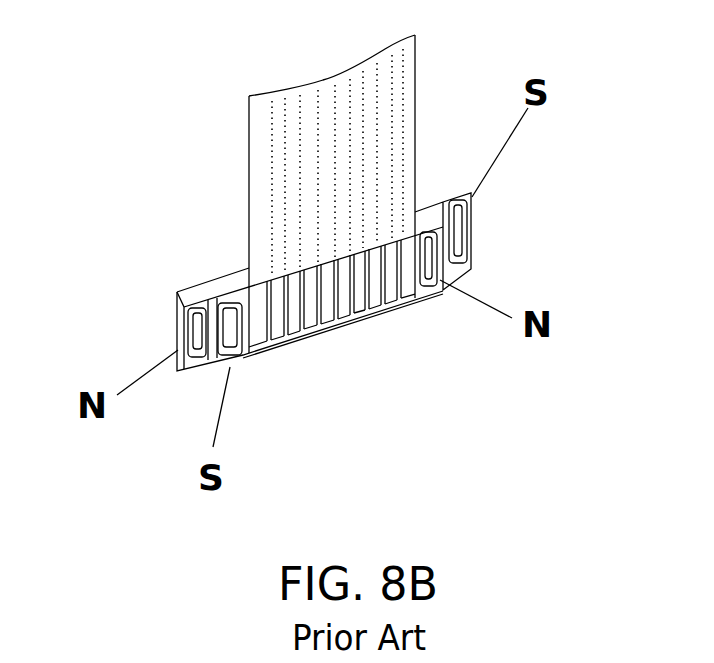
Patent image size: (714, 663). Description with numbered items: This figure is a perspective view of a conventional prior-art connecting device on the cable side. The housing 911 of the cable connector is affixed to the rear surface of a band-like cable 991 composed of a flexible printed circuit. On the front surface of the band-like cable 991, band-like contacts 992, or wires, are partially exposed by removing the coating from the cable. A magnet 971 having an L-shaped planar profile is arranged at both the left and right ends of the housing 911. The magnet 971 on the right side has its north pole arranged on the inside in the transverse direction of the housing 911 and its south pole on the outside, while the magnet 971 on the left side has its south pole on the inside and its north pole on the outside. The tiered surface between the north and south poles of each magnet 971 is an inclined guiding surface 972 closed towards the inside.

The band-like cable 991 is at (262, 117).
The housing 911 is at (242, 275).
The band-like contacts 992 is at (366, 293).
The magnet 971 is at (175, 332).
The inclined guiding surface 972 is at (193, 373).